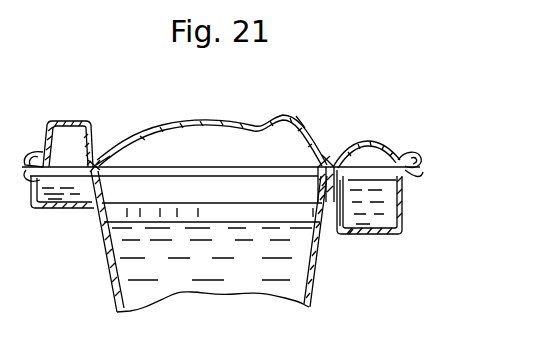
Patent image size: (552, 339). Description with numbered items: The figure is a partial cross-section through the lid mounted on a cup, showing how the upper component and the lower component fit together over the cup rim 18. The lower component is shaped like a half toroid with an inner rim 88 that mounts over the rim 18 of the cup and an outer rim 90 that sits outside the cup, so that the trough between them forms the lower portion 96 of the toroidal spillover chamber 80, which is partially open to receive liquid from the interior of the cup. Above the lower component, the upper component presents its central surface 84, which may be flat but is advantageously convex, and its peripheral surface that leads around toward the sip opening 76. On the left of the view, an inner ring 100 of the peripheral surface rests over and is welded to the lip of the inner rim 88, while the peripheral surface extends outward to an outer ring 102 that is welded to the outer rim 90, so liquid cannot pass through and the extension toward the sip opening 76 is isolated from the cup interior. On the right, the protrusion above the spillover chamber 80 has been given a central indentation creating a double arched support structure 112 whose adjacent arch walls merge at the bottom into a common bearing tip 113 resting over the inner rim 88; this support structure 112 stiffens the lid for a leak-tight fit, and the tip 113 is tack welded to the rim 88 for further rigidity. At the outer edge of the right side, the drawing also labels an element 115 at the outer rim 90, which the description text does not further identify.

The rim 18 is at (96, 210).
The sip opening 76 is at (65, 122).
The spillover chamber 80 is at (401, 212).
The central surface 84 is at (178, 124).
The inner rim 88 is at (340, 164).
The outer rim 90 is at (32, 205).
The lower portion 96 is at (368, 232).
The inner ring 100 is at (97, 160).
The outer ring 102 is at (33, 154).
The support structure 112 is at (304, 124).
The bearing tip 113 is at (333, 160).
The hook 115 is at (406, 156).